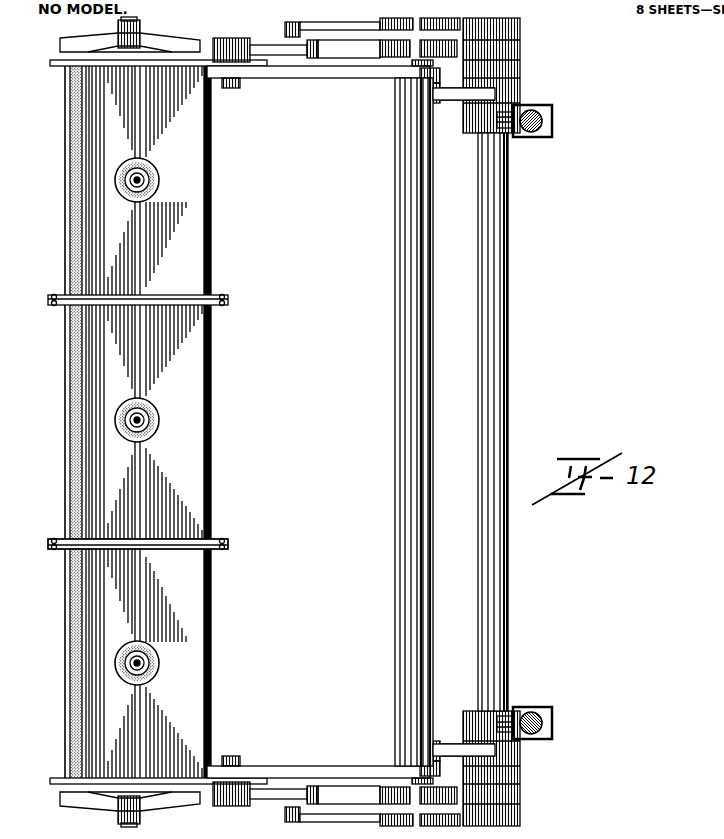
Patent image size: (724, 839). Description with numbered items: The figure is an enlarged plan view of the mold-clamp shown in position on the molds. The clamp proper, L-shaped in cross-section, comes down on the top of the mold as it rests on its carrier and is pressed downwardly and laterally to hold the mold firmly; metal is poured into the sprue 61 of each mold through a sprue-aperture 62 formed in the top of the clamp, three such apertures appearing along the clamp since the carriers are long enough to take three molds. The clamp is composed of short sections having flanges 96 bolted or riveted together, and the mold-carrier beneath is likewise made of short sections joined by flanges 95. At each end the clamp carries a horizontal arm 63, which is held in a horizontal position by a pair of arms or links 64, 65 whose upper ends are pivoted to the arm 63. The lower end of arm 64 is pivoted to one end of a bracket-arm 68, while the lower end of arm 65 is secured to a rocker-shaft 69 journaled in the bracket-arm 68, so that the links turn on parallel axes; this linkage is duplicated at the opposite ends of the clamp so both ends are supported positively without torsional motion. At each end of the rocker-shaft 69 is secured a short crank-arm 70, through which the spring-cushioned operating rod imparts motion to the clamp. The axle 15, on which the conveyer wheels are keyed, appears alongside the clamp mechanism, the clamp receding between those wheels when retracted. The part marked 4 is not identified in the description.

The end cap bracket 4 is at (142, 35).
The axle 15 is at (430, 582).
The sprue 61 is at (160, 174).
The sprue-aperture 62 is at (160, 184).
The horizontal arm 63 is at (282, 72).
The arm or link 64 is at (255, 44).
The arm or link 65 is at (447, 105).
The bracket-arm 68 is at (323, 30).
The rocker-shaft 69 is at (497, 632).
The crank-arm 70 is at (524, 140).
The flanges 95 is at (46, 541).
The flanges 96 is at (230, 302).